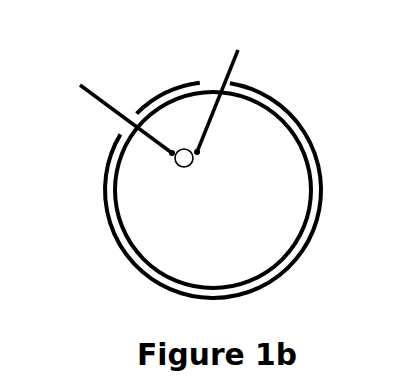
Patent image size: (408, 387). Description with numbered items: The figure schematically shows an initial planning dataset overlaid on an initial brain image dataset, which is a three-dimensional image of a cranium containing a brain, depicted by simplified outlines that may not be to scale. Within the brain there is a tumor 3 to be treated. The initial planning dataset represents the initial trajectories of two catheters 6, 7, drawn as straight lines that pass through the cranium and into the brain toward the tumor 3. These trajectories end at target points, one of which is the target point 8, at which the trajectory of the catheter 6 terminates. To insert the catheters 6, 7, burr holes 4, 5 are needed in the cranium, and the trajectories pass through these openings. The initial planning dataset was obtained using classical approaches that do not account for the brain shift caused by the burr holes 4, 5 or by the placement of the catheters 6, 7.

The tumor 3 is at (185, 168).
The burr hole 4 is at (129, 116).
The burr hole 5 is at (213, 78).
The catheter 6 is at (102, 101).
The catheter 7 is at (232, 68).
The target point 8 is at (177, 164).